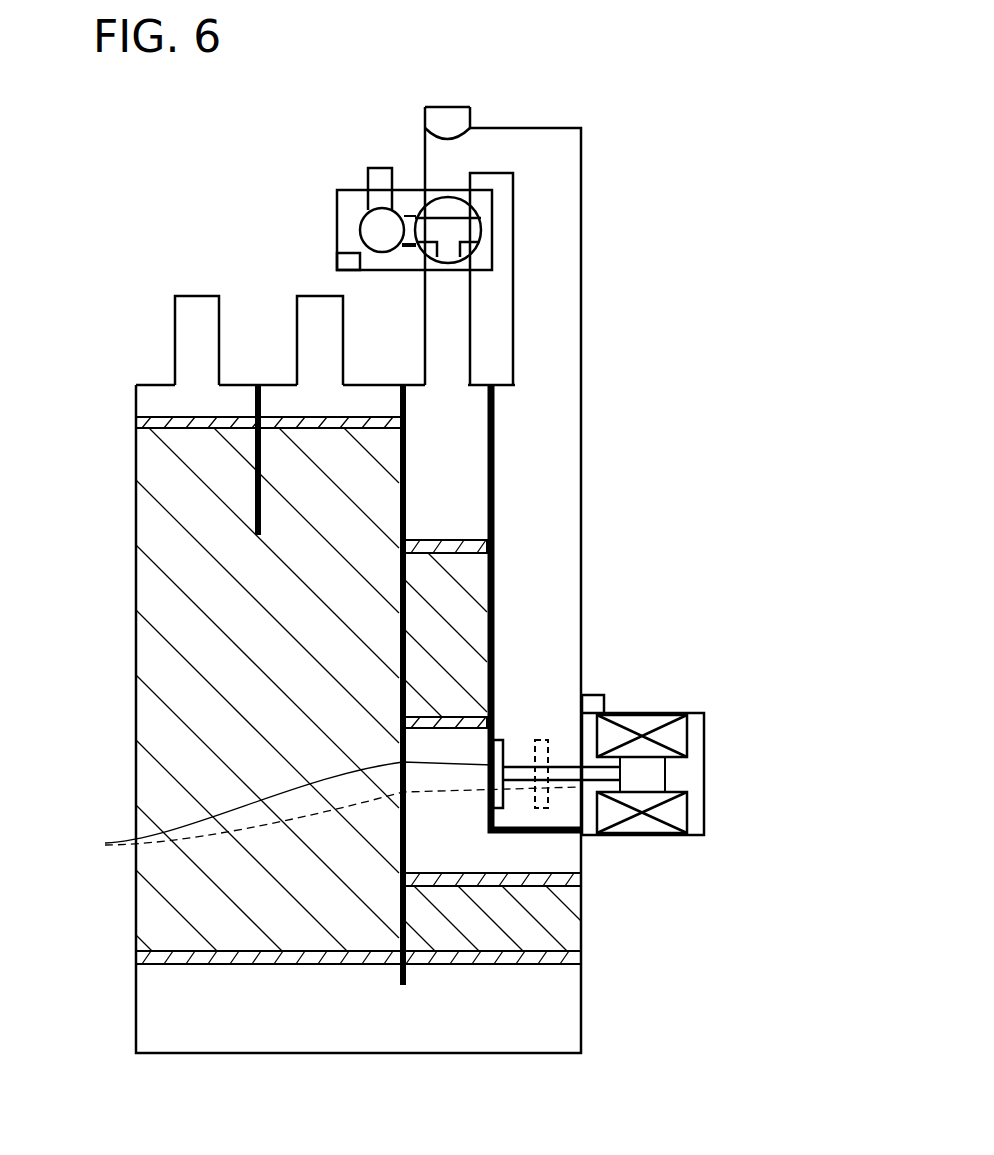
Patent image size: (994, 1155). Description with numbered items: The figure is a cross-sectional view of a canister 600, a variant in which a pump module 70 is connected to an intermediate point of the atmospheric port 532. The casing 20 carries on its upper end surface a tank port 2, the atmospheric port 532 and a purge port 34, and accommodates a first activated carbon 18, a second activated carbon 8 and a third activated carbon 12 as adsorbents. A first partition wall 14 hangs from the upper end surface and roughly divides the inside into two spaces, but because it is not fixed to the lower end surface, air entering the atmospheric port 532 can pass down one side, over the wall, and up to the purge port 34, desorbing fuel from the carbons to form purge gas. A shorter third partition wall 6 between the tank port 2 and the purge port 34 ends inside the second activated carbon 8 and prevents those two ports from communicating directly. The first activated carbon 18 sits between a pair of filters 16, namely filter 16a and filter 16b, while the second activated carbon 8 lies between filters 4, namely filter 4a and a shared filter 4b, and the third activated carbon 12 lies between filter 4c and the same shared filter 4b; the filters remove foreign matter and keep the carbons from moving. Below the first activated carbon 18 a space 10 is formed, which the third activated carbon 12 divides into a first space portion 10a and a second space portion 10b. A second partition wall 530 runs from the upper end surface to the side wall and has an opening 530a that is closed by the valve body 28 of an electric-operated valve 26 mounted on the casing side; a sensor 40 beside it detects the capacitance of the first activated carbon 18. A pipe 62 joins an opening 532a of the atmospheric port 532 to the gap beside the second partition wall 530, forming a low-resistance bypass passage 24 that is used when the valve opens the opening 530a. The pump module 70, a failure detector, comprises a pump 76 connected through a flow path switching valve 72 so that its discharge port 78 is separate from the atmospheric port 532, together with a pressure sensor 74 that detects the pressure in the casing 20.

The canister 600 is at (719, 203).
The tank port 2 is at (175, 342).
The purge port 34 is at (297, 342).
The filters 4 is at (373, 713).
The filter 4a is at (145, 424).
The shared filter 4b is at (570, 958).
The filter 4c is at (575, 880).
The third partition wall 6 is at (258, 510).
The second activated carbon 8 is at (147, 585).
The space 10 is at (655, 952).
The first space portion 10a is at (570, 848).
The second space portion 10b is at (570, 1012).
The third activated carbon 12 is at (565, 925).
The first partition wall 14 is at (403, 645).
The filters 16 is at (556, 609).
The filter 16a is at (493, 545).
The filter 16b is at (496, 722).
The first activated carbon 18 is at (470, 680).
The casing 20 is at (581, 573).
The bypass passage 24 is at (570, 530).
The electric-operated valve 26 is at (704, 742).
The valve body 28 is at (325, 810).
The sensor 40 is at (604, 710).
The pipe 62 is at (581, 320).
The pump module 70 is at (337, 218).
The flow path switching valve 72 is at (481, 228).
The pressure sensor 74 is at (337, 262).
The pump 76 is at (360, 233).
The discharge port 78 is at (368, 180).
The second partition wall 530 is at (493, 418).
The opening 530a is at (600, 788).
The atmospheric port 532 is at (423, 162).
The opening 532a is at (425, 137).